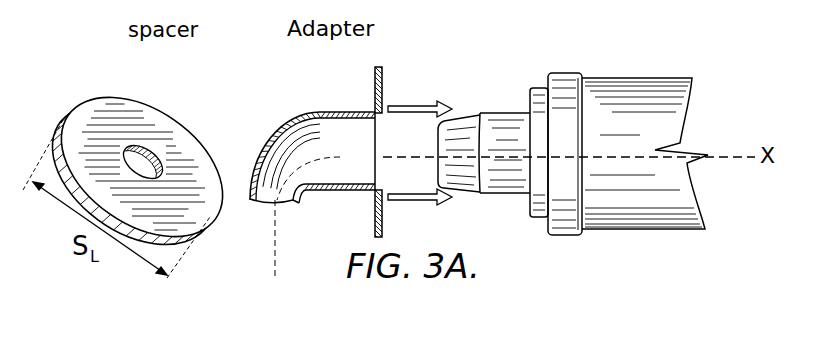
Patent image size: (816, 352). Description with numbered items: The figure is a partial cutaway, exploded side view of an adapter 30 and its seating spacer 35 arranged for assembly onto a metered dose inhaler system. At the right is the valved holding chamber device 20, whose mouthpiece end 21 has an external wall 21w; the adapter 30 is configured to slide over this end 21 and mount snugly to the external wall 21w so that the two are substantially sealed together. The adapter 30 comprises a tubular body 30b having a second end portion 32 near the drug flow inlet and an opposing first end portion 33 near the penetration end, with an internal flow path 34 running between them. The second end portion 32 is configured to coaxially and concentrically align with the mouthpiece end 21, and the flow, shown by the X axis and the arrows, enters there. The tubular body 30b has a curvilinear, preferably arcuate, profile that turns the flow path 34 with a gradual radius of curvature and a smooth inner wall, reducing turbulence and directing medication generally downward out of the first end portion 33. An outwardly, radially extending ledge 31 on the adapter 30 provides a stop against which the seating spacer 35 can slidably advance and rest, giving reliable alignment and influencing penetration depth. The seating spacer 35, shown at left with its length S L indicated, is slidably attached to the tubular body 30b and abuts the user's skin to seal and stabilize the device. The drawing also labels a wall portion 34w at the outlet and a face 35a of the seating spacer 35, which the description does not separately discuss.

The valved holding chamber device 20 is at (642, 78).
The mouthpiece end 21 is at (462, 118).
The external wall 21w is at (465, 194).
The adapter 30 is at (298, 116).
The tubular body 30b is at (316, 118).
The outwardly extending ledge 31 is at (383, 88).
The second end portion 32 is at (383, 140).
The first end portion 33 is at (311, 196).
The internal flow path 34 is at (276, 258).
The adapter outlet wall 34w is at (251, 203).
The seating spacer 35 is at (63, 130).
The spacer face 35a is at (160, 110).